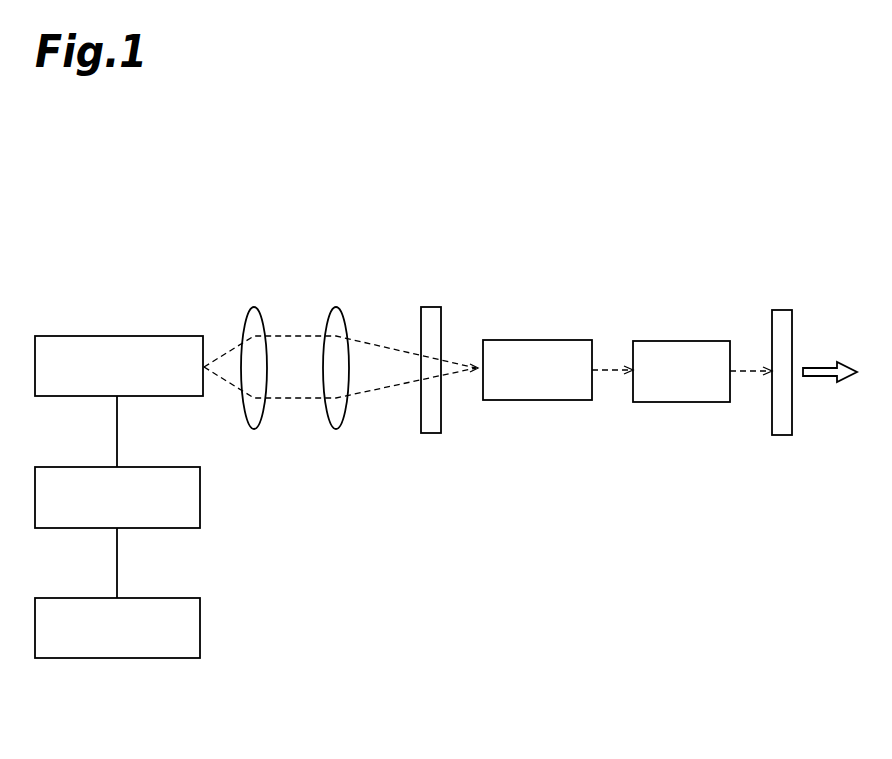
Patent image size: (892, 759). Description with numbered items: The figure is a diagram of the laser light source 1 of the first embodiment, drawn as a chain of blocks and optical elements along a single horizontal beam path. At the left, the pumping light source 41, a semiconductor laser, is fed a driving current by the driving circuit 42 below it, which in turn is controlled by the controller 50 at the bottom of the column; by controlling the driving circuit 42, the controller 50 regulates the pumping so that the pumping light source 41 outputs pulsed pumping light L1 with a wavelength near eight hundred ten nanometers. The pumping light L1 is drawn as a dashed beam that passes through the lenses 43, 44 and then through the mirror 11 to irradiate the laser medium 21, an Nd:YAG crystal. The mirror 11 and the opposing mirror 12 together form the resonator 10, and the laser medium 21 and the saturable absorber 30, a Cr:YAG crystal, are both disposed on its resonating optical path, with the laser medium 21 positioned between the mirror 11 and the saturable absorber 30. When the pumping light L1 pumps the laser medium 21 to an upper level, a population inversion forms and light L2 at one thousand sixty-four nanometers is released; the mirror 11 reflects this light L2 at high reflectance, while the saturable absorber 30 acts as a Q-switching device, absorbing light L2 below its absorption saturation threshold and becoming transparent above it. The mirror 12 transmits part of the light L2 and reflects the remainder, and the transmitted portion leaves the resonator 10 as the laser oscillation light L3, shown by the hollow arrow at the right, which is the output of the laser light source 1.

The laser light source 1 is at (708, 210).
The resonator 10 is at (690, 572).
The mirror 11 is at (432, 433).
The mirror 12 is at (778, 435).
The laser medium 21 is at (537, 340).
The saturable absorber 30 is at (690, 341).
The pumping light source 41 is at (62, 336).
The driving circuit 42 is at (62, 467).
The lens 43 is at (257, 307).
The lens 44 is at (340, 307).
The controller 50 is at (62, 598).
The pumping light L1 is at (228, 352).
The light emitted from the laser medium L2 is at (615, 368).
The laser oscillation light L3 is at (824, 368).